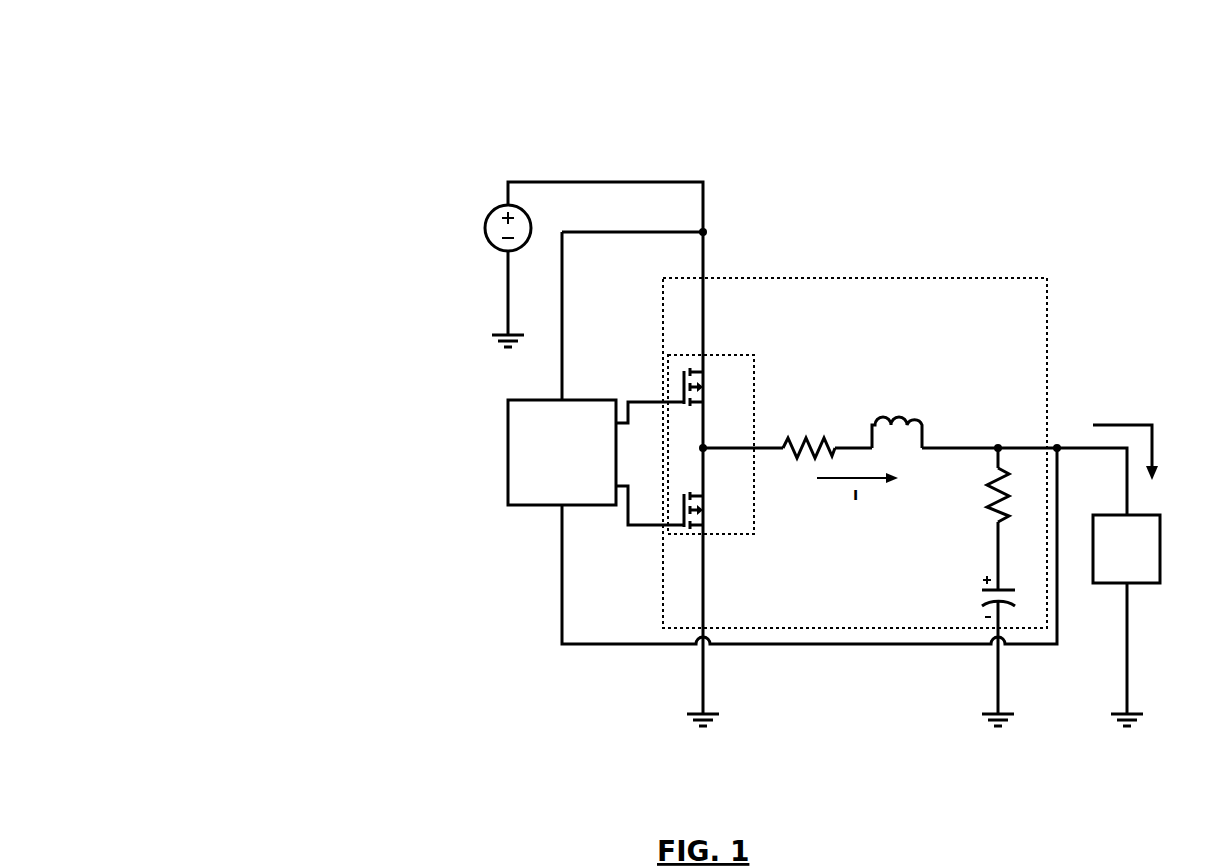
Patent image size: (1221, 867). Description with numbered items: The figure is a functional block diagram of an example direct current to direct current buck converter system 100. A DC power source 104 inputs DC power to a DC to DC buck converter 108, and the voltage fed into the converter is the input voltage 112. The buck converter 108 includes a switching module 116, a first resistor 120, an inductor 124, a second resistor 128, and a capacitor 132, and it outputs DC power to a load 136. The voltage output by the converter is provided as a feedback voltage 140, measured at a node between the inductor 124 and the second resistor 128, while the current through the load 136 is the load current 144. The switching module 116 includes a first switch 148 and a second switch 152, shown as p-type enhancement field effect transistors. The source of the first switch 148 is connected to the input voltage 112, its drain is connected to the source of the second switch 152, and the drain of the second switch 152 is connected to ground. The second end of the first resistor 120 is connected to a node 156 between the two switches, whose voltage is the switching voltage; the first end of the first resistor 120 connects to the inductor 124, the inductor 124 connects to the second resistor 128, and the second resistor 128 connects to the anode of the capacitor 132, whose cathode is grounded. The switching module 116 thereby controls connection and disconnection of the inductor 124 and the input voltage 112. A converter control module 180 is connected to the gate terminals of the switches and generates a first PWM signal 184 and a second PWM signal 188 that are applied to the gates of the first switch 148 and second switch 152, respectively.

The DC to DC buck converter system 100 is at (300, 54).
The DC power source 104 is at (503, 206).
The DC to DC buck converter 108 is at (922, 278).
The input voltage 112 is at (704, 231).
The switching module 116 is at (754, 392).
The first resistor 120 is at (831, 444).
The inductor 124 is at (923, 424).
The second resistor 128 is at (993, 510).
The capacitor 132 is at (994, 602).
The load 136 is at (1160, 549).
The feedback voltage 140 is at (1058, 447).
The load current 144 is at (1140, 425).
The first switch 148 is at (713, 380).
The second switch 152 is at (716, 508).
The node 156 is at (704, 449).
The converter control module 180 is at (508, 452).
The first PWM signal 184 is at (628, 401).
The second PWM signal 188 is at (630, 526).